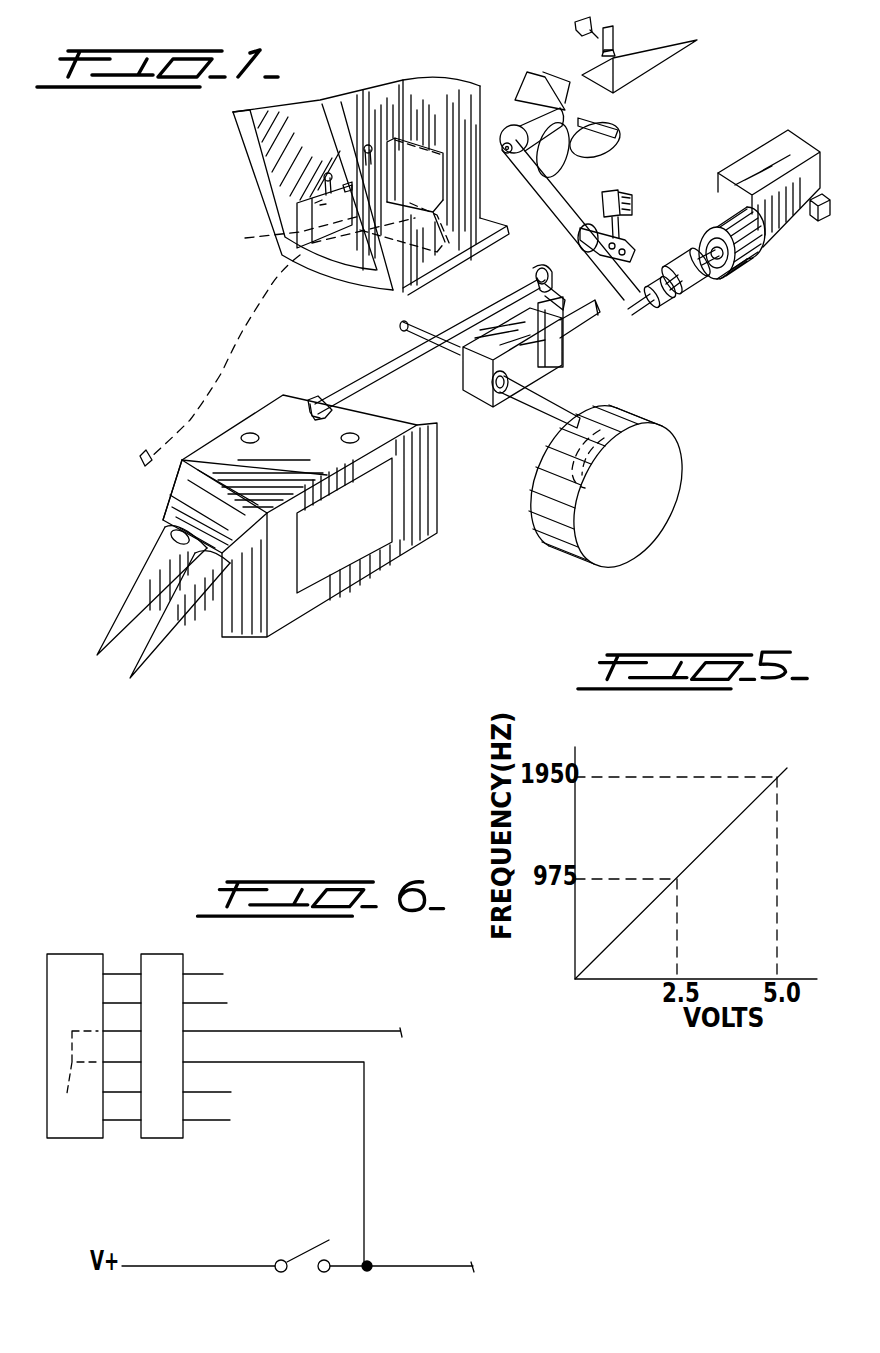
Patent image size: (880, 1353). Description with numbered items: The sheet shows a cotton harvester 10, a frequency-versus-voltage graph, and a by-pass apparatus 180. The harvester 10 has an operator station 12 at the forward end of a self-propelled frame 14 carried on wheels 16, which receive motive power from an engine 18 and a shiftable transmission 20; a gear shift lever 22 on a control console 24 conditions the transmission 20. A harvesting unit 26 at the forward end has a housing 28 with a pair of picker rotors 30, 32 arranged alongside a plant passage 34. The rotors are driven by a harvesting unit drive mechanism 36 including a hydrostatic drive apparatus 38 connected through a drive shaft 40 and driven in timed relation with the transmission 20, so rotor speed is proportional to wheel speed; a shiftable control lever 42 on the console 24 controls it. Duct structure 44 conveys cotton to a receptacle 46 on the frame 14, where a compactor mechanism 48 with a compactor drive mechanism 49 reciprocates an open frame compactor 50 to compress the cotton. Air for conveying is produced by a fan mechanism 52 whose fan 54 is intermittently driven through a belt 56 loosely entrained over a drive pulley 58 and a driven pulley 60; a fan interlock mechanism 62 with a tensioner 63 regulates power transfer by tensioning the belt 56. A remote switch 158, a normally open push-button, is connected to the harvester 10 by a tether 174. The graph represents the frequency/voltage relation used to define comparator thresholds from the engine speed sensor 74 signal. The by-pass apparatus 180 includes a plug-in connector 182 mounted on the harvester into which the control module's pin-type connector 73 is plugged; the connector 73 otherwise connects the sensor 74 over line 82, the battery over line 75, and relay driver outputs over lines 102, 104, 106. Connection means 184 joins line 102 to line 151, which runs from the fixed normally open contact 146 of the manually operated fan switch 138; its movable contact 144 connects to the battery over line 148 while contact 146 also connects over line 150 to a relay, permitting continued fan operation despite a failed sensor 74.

In FIG. 1, the cotton harvester 10 is at (230, 275).
In FIG. 1, the operator station 12 is at (342, 300).
In FIG. 1, the frame 14 is at (500, 240).
In FIG. 1, the wheels 16 is at (650, 481).
In FIG. 1, the engine 18 is at (752, 135).
In FIG. 1, the transmission 20 is at (550, 378).
In FIG. 1, the gear shift lever 22 is at (330, 186).
In FIG. 1, the control console 24 is at (311, 236).
In FIG. 1, the harvesting unit 26 is at (375, 582).
In FIG. 1, the housing 28 is at (182, 485).
In FIG. 1, the picker rotor 30 is at (256, 432).
In FIG. 1, the picker rotor 32 is at (358, 435).
In FIG. 1, the plant passage 34 is at (190, 552).
In FIG. 1, the harvesting unit drive mechanism 36 is at (535, 273).
In FIG. 1, the hydrostatic drive apparatus 38 is at (575, 352).
In FIG. 1, the drive shaft 40 is at (360, 378).
In FIG. 1, the shiftable control lever 42 is at (347, 185).
In FIG. 1, the duct structure 44 is at (437, 528).
In FIG. 1, the receptacle 46 is at (652, 66).
In FIG. 1, the compactor mechanism 48 is at (628, 30).
In FIG. 1, the compactor drive mechanism 49 is at (575, 30).
In FIG. 1, the open frame compactor 50 is at (604, 52).
In FIG. 1, the fan mechanism 52 is at (630, 145).
In FIG. 1, the fan 54 is at (598, 130).
In FIG. 1, the belt 56 is at (560, 198).
In FIG. 1, the drive pulley 58 is at (622, 318).
In FIG. 1, the driven pulley 60 is at (506, 143).
In FIG. 1, the fan interlock mechanism 62 is at (645, 236).
In FIG. 1, the tensioner 63 is at (632, 215).
In FIG. 6, the pin-type plug-in connector 73 is at (150, 950).
In FIG. 1, the engine speed sensor 74 is at (812, 222).
In FIG. 6, the line 75 is at (220, 1118).
In FIG. 6, the line 82 is at (200, 968).
In FIG. 6, the line 102 is at (215, 1031).
In FIG. 6, the line 104 is at (222, 1090).
In FIG. 6, the line 106 is at (205, 998).
In FIG. 6, the fan switch 138 is at (313, 1232).
In FIG. 6, the movable contact 144 is at (278, 1258).
In FIG. 6, the fixed normally open contact 146 is at (328, 1272).
In FIG. 6, the line 148 is at (210, 1266).
In FIG. 6, the line 150 is at (400, 1266).
In FIG. 6, the line 151 is at (235, 1062).
In FIG. 1, the remote switch 158 is at (146, 457).
In FIG. 1, the tether 174 is at (228, 358).
In FIG. 6, the by-pass apparatus 180 is at (50, 945).
In FIG. 6, the plug-in connector 182 is at (73, 955).
In FIG. 6, the connection means 184 is at (76, 1078).